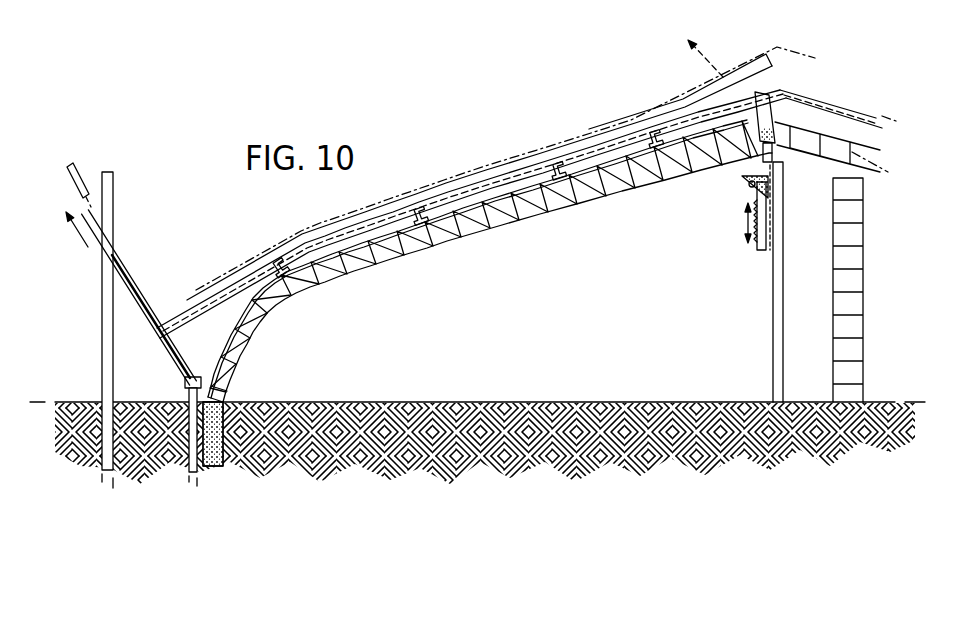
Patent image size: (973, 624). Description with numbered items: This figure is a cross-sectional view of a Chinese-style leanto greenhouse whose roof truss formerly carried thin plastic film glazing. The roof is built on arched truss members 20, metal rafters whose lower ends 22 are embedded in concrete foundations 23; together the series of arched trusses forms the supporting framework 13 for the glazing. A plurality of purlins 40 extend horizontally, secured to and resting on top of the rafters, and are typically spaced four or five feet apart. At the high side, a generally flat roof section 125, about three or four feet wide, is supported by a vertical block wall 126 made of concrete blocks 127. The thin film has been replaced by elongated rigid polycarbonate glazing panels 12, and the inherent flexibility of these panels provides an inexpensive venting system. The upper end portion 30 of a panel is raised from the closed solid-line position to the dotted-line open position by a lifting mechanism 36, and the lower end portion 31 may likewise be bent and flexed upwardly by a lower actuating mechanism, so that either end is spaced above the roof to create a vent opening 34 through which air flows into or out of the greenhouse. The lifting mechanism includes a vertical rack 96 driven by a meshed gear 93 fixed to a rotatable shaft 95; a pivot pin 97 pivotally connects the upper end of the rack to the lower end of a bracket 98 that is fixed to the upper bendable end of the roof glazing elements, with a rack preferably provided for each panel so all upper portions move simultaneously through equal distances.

The glazing panels 12 is at (471, 214).
The supporting framework 13 is at (609, 218).
The arched truss members 20 is at (504, 232).
The lower ends 22 is at (240, 372).
The concrete foundations 23 is at (217, 428).
The upper end portion 30 is at (751, 64).
The lower end portion 31 is at (190, 296).
The vent opening 34 is at (172, 336).
The lifting mechanism 36 is at (150, 241).
The purlins 40 is at (300, 278).
The meshed gear 93 is at (743, 200).
The rotatable shaft 95 is at (742, 180).
The vertical rack 96 is at (763, 252).
The pivot pin 97 is at (805, 137).
The bracket 98 is at (788, 107).
The flat roof section 125 is at (853, 118).
The vertical block wall 126 is at (825, 363).
The concrete blocks 127 is at (857, 260).